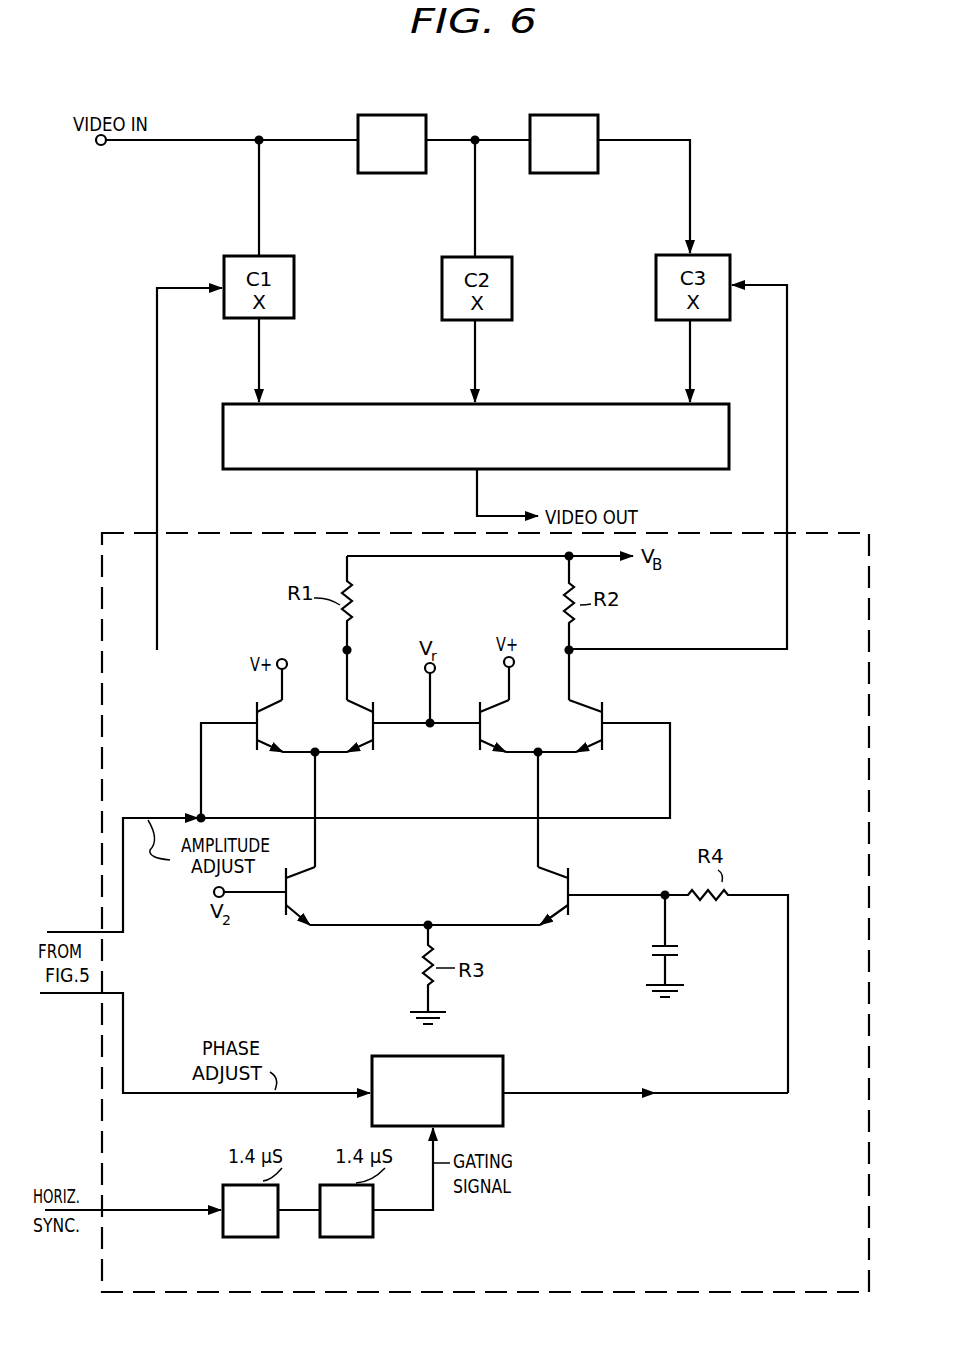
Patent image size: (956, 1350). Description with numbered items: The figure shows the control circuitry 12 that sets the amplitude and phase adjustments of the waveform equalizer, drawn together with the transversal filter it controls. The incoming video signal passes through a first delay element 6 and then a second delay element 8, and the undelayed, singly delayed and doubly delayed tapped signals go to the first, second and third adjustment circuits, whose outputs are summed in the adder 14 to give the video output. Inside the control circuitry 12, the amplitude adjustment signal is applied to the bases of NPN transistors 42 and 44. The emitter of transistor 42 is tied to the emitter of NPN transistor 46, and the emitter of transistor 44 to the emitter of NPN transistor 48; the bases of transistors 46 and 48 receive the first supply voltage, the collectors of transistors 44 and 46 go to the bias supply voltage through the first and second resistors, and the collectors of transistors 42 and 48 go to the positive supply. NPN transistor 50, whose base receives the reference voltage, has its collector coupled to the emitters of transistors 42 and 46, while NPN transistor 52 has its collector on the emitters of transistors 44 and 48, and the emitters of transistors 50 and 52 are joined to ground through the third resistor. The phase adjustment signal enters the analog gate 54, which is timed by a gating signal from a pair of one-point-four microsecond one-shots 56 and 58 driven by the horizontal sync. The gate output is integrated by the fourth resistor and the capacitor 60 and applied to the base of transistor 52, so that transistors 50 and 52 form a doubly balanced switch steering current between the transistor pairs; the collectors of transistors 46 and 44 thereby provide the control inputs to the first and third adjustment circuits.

The delay element 6 is at (398, 114).
The delay element 8 is at (579, 114).
The control circuitry 12 is at (858, 532).
The adder 14 is at (223, 440).
The NPN transistor 42 is at (264, 729).
The NPN transistor 44 is at (597, 717).
The NPN transistor 46 is at (365, 722).
The NPN transistor 48 is at (486, 731).
The NPN transistor 50 is at (296, 901).
The NPN transistor 52 is at (562, 893).
The analog gate 54 is at (502, 1054).
The one-shot 56 is at (222, 1227).
The one-shot 58 is at (374, 1227).
The capacitor 60 is at (680, 951).